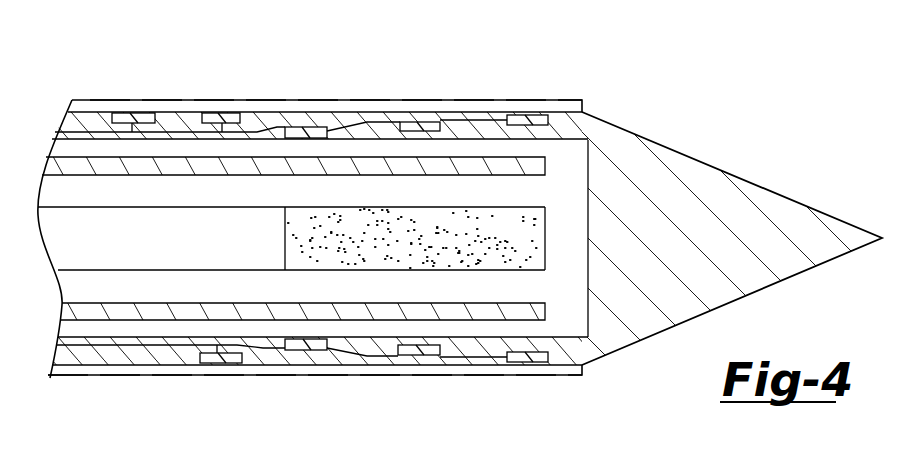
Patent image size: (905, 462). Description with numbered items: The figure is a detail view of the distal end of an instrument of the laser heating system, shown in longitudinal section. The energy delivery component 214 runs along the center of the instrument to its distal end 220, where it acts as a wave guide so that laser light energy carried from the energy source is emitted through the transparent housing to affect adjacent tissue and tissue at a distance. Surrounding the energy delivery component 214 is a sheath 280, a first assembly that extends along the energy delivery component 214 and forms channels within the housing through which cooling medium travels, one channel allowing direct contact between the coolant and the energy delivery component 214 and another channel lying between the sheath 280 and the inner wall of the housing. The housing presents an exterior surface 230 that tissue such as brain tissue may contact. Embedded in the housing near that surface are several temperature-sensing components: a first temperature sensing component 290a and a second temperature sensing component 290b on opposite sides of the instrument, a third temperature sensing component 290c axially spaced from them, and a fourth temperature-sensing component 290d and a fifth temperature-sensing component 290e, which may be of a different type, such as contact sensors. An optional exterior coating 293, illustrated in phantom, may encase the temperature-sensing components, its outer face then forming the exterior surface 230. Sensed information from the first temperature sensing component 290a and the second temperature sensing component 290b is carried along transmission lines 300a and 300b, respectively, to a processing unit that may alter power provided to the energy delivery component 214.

The energy delivery component 214 is at (86, 280).
The distal end 220 is at (533, 218).
The exterior surface 230 is at (470, 111).
The sheath 280 is at (235, 176).
The first temperature sensing component 290a is at (308, 346).
The second temperature sensing component 290b is at (302, 132).
The third temperature sensing component 290c is at (128, 118).
The fourth temperature-sensing component 290d is at (215, 358).
The fifth temperature-sensing component 290e is at (222, 118).
The exterior coating 293 is at (99, 100).
The transmission line 300a is at (110, 345).
The transmission line 300b is at (174, 132).